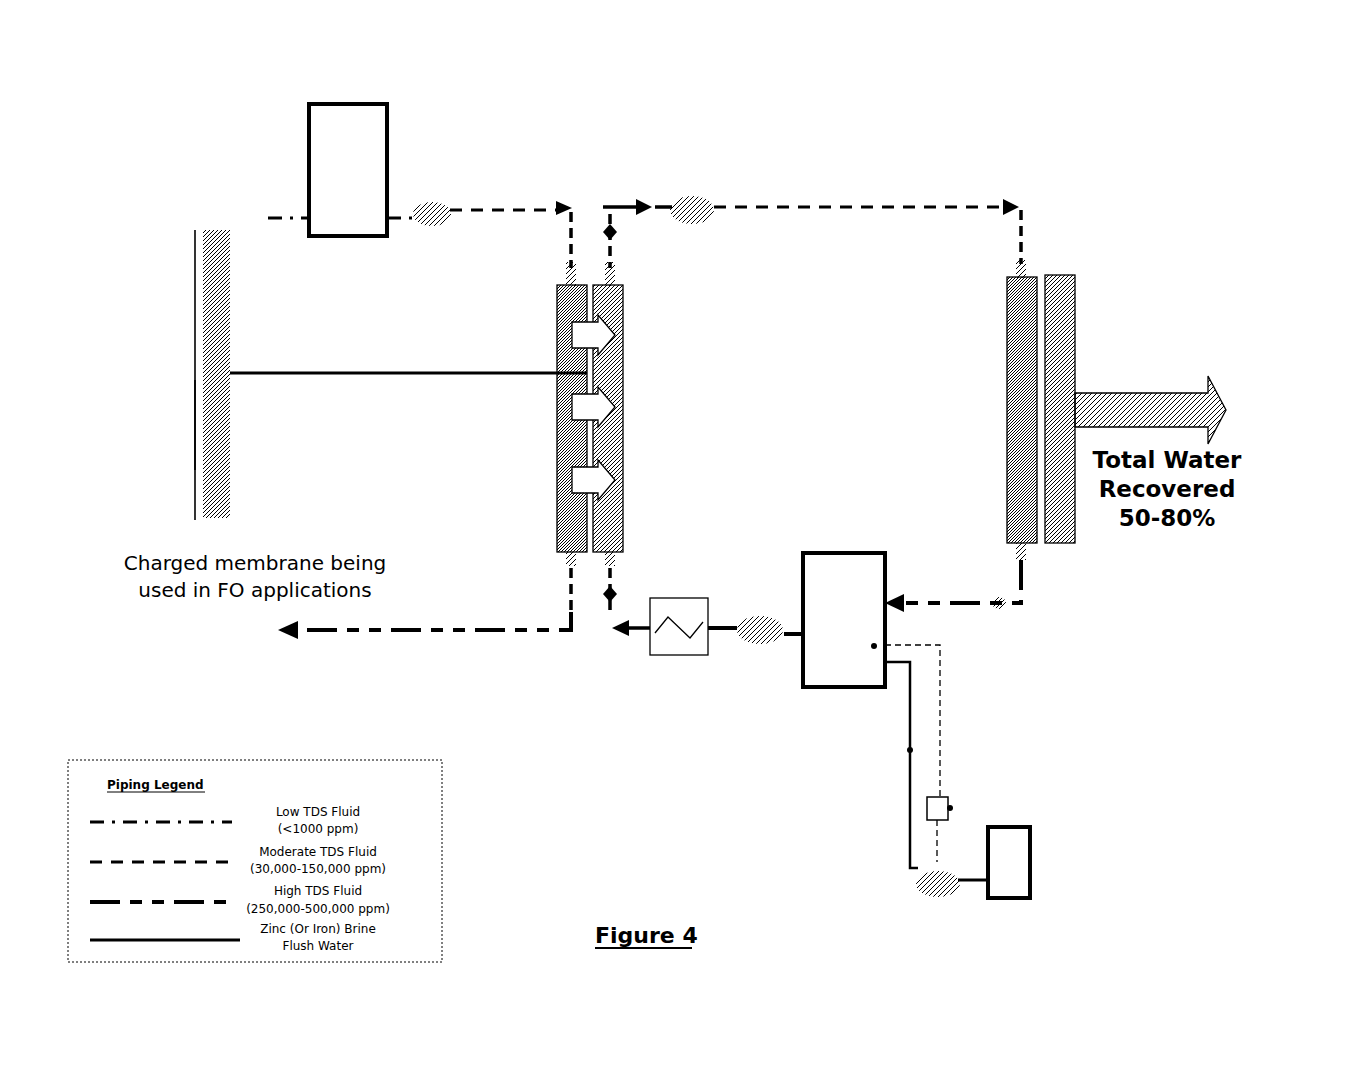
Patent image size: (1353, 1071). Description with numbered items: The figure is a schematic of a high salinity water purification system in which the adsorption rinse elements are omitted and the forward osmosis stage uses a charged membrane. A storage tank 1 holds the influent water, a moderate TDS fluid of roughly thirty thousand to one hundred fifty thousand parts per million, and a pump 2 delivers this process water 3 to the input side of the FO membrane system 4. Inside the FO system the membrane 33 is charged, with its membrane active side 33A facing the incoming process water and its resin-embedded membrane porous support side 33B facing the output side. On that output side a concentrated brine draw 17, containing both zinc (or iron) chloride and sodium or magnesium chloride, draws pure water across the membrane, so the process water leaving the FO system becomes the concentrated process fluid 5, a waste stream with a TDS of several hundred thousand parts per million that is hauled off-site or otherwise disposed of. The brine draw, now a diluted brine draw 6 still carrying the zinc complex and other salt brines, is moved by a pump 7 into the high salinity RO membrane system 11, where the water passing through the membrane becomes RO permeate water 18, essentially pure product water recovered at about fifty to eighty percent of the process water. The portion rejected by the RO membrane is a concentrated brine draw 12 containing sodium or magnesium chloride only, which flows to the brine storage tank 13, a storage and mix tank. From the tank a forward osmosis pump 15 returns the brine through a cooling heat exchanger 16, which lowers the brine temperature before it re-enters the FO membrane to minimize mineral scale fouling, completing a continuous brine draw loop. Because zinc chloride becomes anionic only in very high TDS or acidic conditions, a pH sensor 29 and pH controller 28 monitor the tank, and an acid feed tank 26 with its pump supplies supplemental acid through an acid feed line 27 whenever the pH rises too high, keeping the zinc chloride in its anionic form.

The storage tank 1 is at (348, 170).
The pump 2 is at (437, 230).
The process water 3 is at (506, 232).
The FO membrane system 4 is at (570, 441).
The concentrated process fluid 5 is at (424, 611).
The diluted brine draw 6 is at (613, 233).
The media pump 7 is at (840, 226).
The high salinity RO membrane system 11 is at (1032, 522).
The concentrated brine draw 12 is at (998, 605).
The brine storage tank 13 is at (844, 620).
The forward osmosis pump 15 is at (755, 641).
The cooling heat exchanger 16 is at (663, 640).
The concentrated brine draw 17 is at (610, 598).
The RO permeate water 18 is at (1202, 406).
The acid feed tank 26 is at (1020, 869).
The acid feed line 27 is at (910, 750).
The pH controller 28 is at (952, 806).
The pH sensor 29 is at (874, 646).
The membrane 33 is at (195, 390).
The membrane active side 33A is at (185, 477).
The resin-embedded membrane porous support side 33B is at (213, 505).